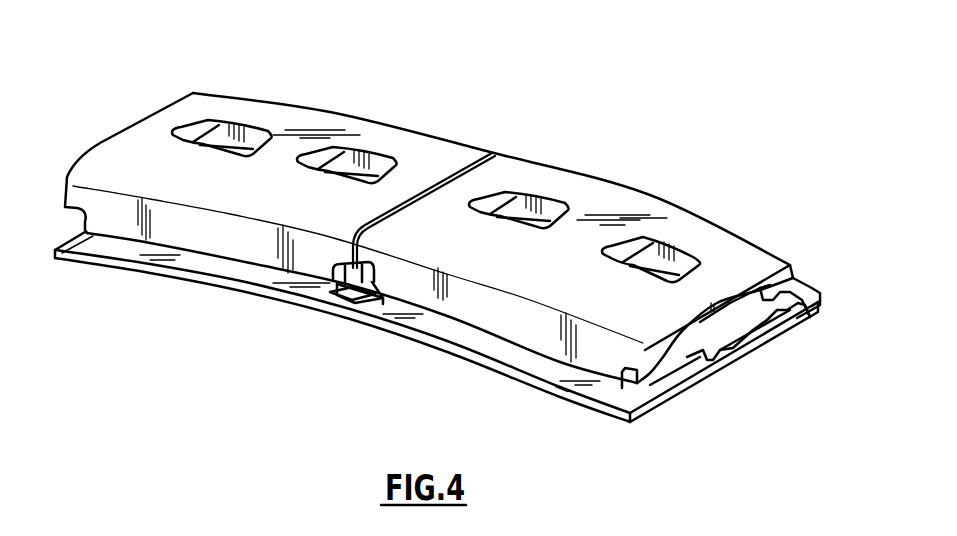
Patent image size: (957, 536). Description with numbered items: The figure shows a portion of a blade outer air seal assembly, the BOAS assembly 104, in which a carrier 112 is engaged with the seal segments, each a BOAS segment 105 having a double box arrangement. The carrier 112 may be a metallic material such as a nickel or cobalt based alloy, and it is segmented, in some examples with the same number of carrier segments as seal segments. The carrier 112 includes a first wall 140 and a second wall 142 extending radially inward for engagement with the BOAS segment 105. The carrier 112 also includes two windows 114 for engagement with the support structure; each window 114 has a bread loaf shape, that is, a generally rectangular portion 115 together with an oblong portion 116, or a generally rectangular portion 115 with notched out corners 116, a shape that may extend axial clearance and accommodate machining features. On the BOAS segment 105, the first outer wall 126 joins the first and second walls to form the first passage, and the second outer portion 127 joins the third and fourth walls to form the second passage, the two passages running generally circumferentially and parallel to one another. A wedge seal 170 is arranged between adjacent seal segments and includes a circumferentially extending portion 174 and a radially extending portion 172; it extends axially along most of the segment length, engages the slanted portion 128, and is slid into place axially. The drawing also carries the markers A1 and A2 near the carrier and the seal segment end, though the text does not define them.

The BOAS assembly 104 is at (718, 103).
The BOAS segment 105 is at (593, 390).
The carrier 112 is at (620, 207).
The window 114 is at (536, 200).
The generally rectangular portion 115 is at (517, 193).
The oblong portion 116 is at (462, 228).
The first outer wall 126 is at (678, 360).
The second outer portion 127 is at (782, 320).
The slanted portion 128 is at (343, 282).
The first wall 140 is at (530, 330).
The second wall 142 is at (783, 303).
The wedge seal 170 is at (330, 303).
The radially extending portion 172 is at (380, 282).
The circumferentially extending portion 174 is at (363, 305).
The first axis A1 is at (562, 390).
The second axis A2 is at (818, 300).